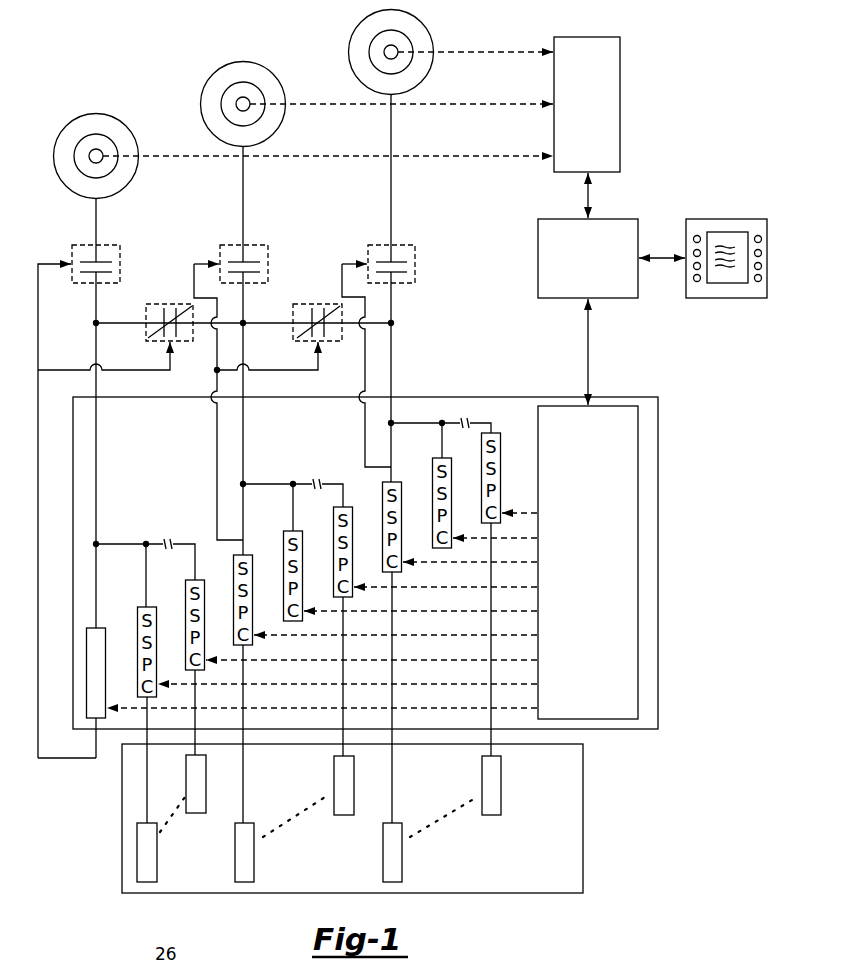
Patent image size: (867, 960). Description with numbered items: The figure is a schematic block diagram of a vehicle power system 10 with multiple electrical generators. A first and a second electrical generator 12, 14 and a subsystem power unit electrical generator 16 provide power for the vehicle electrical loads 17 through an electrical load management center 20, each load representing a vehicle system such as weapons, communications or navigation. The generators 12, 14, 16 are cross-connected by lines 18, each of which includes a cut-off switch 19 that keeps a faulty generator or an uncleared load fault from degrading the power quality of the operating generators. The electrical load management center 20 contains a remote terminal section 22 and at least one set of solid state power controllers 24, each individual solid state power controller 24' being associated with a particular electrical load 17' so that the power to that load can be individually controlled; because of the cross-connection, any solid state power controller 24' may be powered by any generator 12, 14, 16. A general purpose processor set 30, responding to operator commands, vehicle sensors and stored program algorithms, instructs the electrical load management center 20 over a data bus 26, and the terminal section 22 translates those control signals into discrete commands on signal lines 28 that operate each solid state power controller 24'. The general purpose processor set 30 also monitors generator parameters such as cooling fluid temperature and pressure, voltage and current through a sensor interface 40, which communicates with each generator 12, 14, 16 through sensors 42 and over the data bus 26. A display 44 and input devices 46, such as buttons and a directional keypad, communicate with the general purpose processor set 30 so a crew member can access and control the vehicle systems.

The vehicle power system 10 is at (686, 620).
The first electrical generator 12 is at (366, 16).
The second electrical generator 14 is at (236, 62).
The subsystem power unit (SPU) electrical generator 16 is at (87, 114).
The vehicle electrical loads 17 is at (385, 828).
The electrical load 17' is at (340, 818).
The cross-connect lines 18 is at (202, 326).
The cut-off switches 19 is at (163, 304).
The electrical load management center (ELMC) 20 is at (423, 397).
The remote terminal section 22 is at (639, 433).
The set of solid state power controllers (SSPC) 24 is at (149, 556).
The solid state power controller (SSPC) 24' is at (116, 652).
The data bus 26 is at (583, 195).
The signal lines 28 is at (437, 708).
The general purpose processor set (GPPS) 30 is at (538, 278).
The sensor interface (SI) 40 is at (620, 57).
The sensors 42 is at (101, 151).
The display 44 is at (712, 219).
The input devices 46 is at (758, 235).